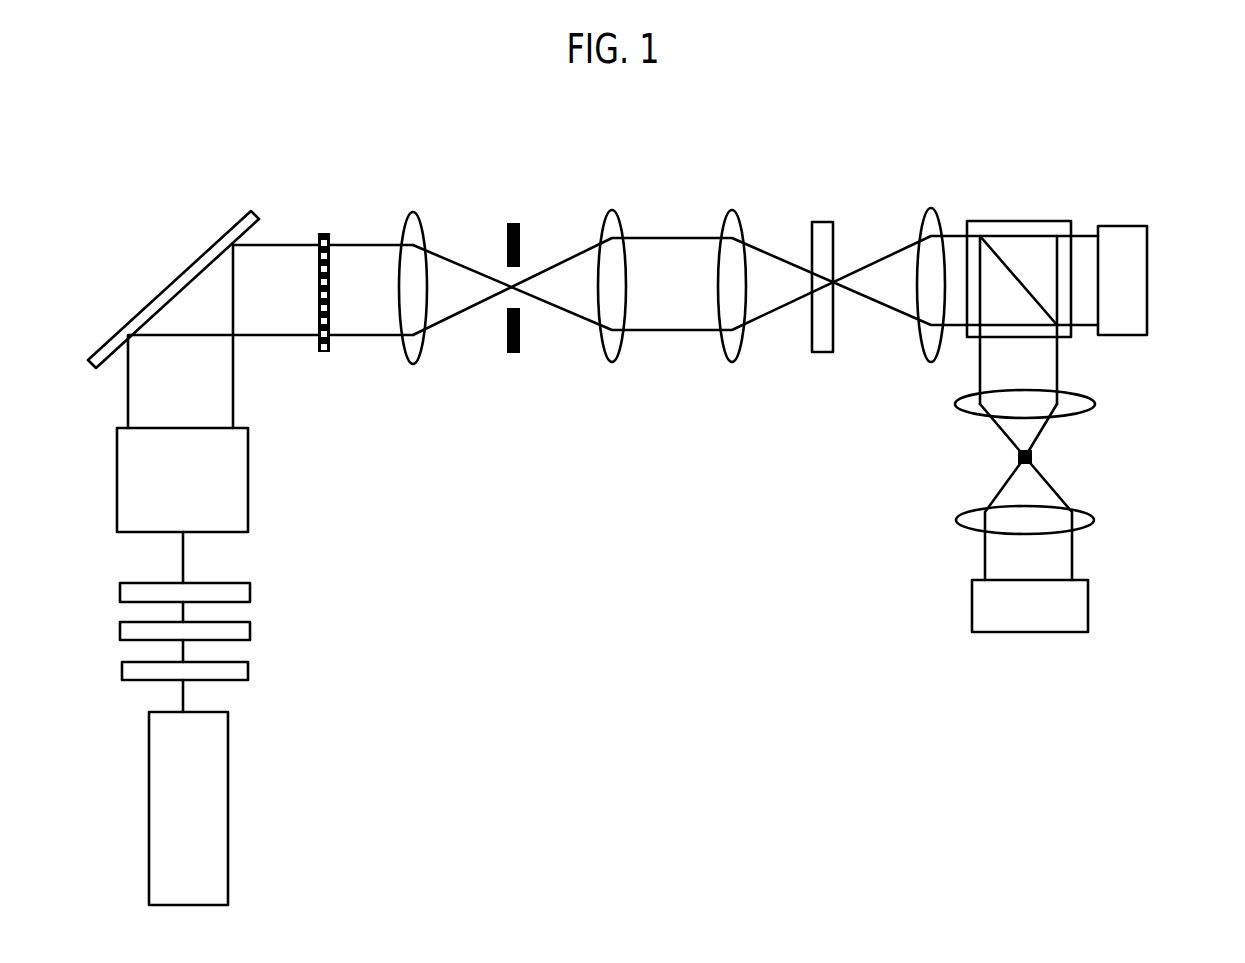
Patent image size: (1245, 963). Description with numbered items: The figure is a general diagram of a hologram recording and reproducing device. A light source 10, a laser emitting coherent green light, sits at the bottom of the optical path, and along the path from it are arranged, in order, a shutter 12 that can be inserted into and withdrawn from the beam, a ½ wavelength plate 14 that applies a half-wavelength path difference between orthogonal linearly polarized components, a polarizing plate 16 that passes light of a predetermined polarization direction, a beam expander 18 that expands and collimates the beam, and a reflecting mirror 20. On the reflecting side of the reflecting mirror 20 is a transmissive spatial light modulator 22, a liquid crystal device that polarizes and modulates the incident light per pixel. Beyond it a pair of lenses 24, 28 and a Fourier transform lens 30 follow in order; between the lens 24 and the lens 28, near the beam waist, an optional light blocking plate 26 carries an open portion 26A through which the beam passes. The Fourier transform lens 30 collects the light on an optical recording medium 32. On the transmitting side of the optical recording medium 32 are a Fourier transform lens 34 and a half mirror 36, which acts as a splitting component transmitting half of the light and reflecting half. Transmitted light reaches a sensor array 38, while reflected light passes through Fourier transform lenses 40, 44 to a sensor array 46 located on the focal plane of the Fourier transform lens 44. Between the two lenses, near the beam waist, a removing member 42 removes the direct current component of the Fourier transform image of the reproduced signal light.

The light source 10 is at (207, 775).
The shutter 12 is at (245, 670).
The ½ wavelength plate 14 is at (245, 630).
The polarizing plate 16 is at (245, 590).
The beam expander 18 is at (237, 500).
The reflecting mirror 20 is at (168, 292).
The transmissive spatial light modulator 22 is at (323, 232).
The lens 24 is at (415, 228).
The light blocking plate 26 is at (520, 232).
The open portion 26A is at (518, 272).
The lens 28 is at (613, 227).
The Fourier transform lens 30 is at (732, 222).
The optical recording medium 32 is at (825, 228).
The Fourier transform lens 34 is at (931, 220).
The half mirror 36 is at (1038, 228).
The sensor array 38 is at (1138, 250).
The Fourier transform lens 40 is at (1082, 402).
The removing member 42 is at (1032, 455).
The Fourier transform lens 44 is at (1082, 520).
The sensor array 46 is at (1078, 605).